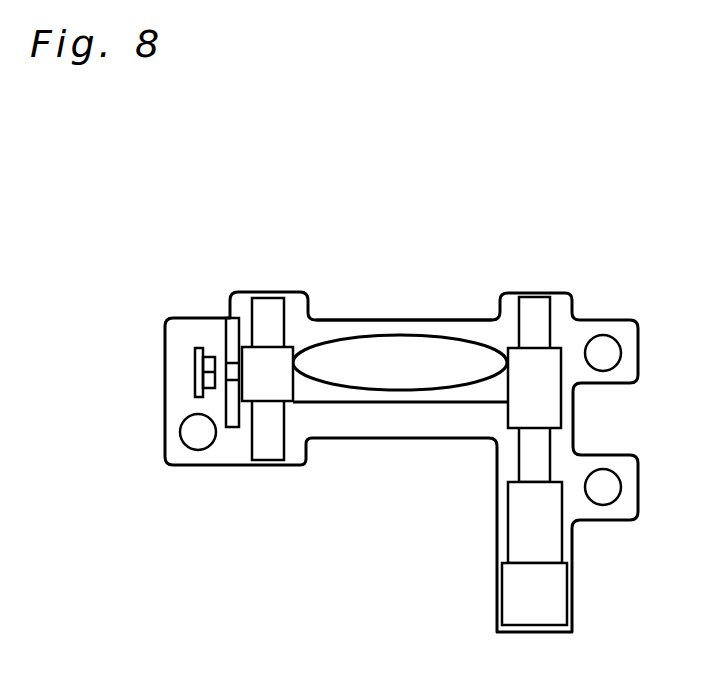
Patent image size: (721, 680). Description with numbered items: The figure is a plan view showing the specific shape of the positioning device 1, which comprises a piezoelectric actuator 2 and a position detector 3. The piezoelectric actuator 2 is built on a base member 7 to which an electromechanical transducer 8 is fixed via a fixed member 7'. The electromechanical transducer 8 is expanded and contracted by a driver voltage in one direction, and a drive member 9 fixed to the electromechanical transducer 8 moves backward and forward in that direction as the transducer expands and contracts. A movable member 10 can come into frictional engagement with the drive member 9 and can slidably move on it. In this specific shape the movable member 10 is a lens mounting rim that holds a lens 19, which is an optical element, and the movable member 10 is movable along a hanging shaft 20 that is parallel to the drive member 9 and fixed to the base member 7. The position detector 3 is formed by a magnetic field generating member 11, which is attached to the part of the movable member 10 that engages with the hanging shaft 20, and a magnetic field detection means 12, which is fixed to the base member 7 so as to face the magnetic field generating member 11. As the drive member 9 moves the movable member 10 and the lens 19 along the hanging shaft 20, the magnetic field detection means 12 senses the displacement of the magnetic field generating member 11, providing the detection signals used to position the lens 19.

The positioning device 1 is at (397, 222).
The piezoelectric actuator 2 is at (608, 430).
The position detector 3 is at (178, 284).
The base member 7 is at (404, 282).
The fixed member 7' is at (573, 595).
The electromechanical transducer 8 is at (563, 535).
The drive member 9 is at (573, 317).
The movable member 10 is at (393, 403).
The magnetic field generating member 11 is at (224, 332).
The magnetic field detection means 12 is at (198, 346).
The lens 19 is at (365, 335).
The hanging shaft 20 is at (265, 461).